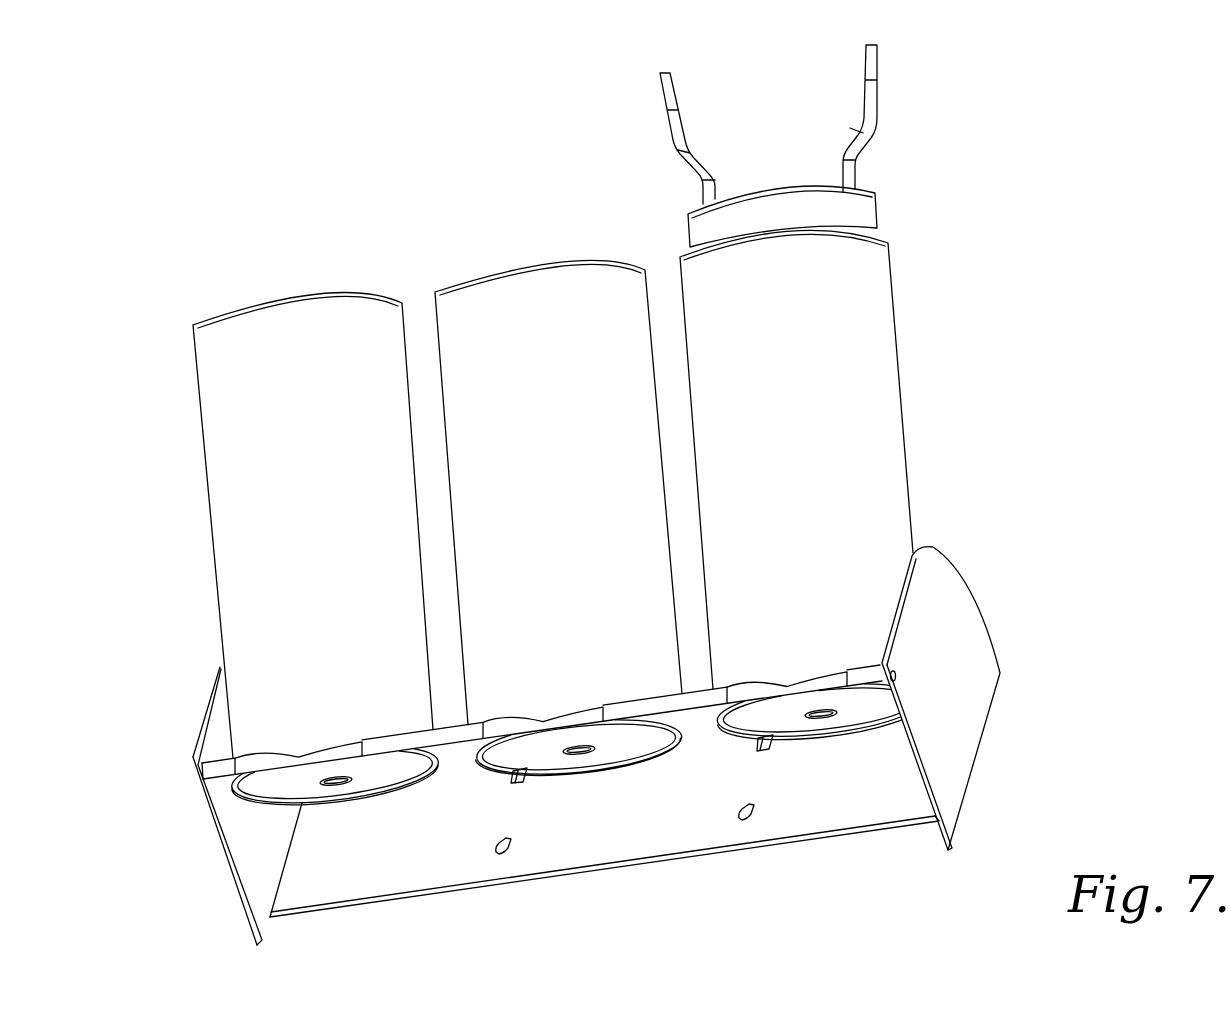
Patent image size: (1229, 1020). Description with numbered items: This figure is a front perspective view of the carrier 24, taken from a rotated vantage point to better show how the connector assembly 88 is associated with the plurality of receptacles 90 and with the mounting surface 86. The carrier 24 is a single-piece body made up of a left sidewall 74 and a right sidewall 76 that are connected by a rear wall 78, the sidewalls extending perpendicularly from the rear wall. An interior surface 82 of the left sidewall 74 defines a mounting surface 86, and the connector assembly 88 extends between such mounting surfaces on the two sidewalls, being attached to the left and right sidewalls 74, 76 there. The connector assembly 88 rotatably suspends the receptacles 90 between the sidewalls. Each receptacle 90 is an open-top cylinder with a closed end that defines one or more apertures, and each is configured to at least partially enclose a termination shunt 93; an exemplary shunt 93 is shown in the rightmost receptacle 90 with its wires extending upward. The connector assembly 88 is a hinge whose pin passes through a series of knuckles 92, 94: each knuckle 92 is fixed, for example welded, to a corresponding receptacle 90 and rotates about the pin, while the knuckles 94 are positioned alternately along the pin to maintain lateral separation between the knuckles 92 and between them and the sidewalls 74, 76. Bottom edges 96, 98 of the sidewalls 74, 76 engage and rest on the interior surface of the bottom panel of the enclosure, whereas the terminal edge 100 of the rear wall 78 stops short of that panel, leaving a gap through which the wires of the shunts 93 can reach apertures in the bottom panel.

The carrier 24 is at (986, 520).
The left sidewall 74 is at (228, 880).
The right sidewall 76 is at (976, 650).
The rear wall 78 is at (742, 848).
The interior surface 82 is at (262, 852).
The mounting surface 86 is at (211, 757).
The connector assembly 88 is at (457, 752).
The receptacle 90 is at (468, 288).
The knuckle 92 is at (350, 752).
The termination shunt 93 is at (878, 212).
The spacer knuckle 94 is at (385, 745).
The bottom edge of left sidewall 96 is at (212, 814).
The bottom edge of right sidewall 98 is at (928, 783).
The terminal edge of rear wall 100 is at (587, 867).